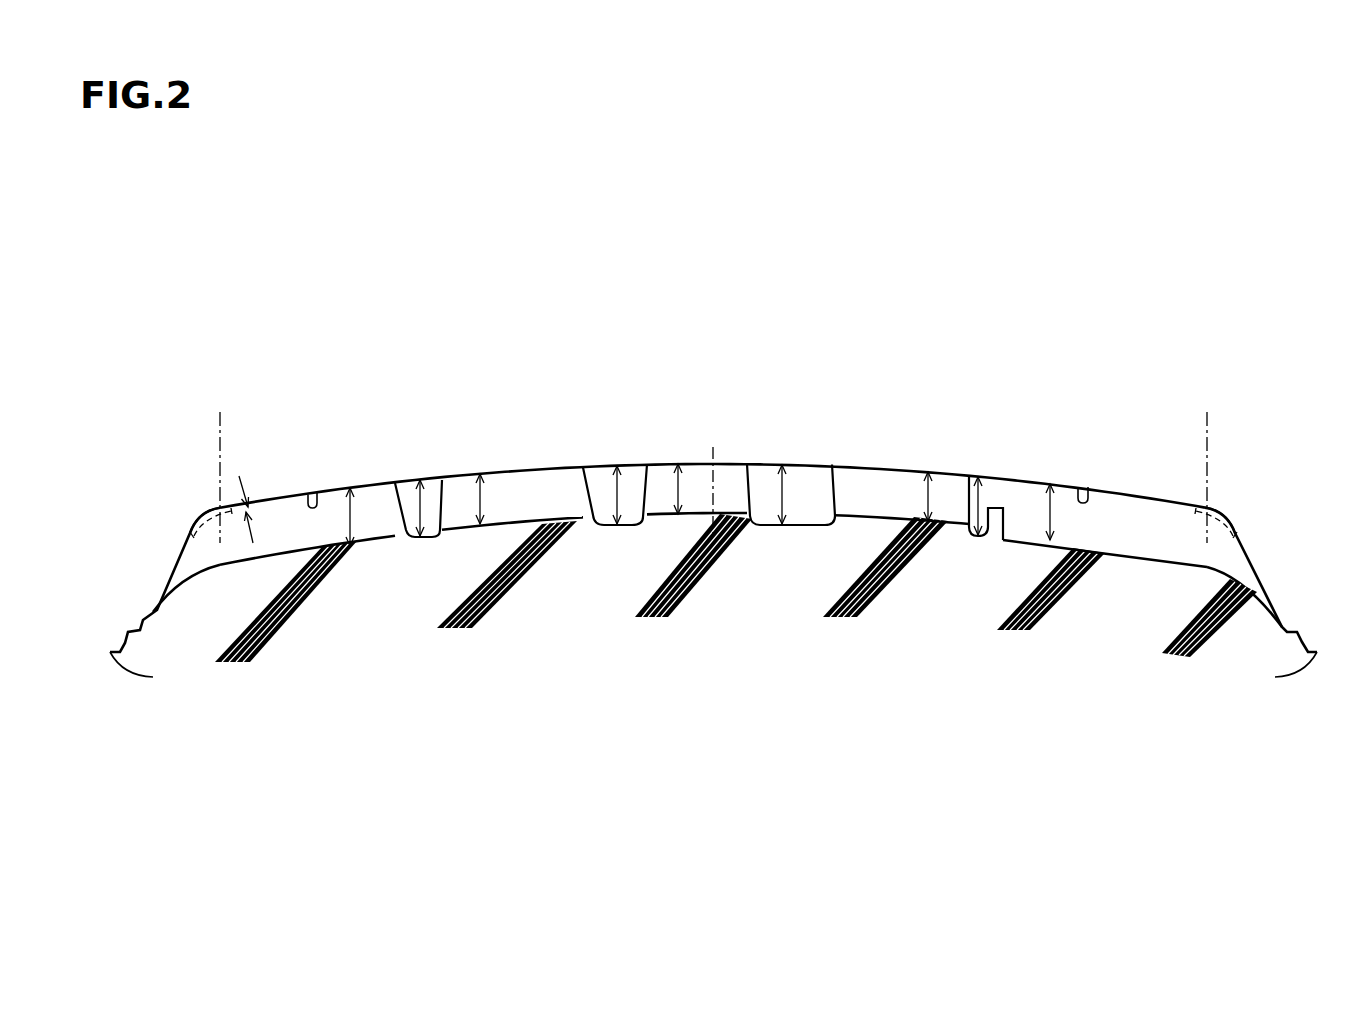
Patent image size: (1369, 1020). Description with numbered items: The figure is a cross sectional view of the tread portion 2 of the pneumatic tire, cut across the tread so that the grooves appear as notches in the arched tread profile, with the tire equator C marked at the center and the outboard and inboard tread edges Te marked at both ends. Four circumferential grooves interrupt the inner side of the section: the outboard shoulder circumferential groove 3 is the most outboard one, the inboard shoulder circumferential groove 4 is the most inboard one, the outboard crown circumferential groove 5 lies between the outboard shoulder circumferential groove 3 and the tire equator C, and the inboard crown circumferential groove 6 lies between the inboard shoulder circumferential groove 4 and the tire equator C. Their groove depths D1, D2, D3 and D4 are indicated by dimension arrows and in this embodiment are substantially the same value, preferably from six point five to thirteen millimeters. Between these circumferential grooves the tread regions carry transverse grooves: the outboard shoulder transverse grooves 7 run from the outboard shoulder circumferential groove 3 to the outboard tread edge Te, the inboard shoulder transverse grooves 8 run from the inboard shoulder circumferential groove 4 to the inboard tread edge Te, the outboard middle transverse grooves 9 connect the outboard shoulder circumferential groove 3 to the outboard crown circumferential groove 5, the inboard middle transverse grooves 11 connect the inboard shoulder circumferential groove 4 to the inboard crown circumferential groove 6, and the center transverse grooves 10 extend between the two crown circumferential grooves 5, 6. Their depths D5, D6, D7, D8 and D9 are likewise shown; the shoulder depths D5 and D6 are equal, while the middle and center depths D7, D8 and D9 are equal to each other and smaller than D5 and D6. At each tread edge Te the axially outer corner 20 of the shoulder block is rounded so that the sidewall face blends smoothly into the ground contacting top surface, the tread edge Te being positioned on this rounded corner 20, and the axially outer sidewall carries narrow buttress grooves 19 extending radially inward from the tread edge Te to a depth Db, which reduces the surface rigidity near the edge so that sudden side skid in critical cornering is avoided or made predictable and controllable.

The tread portion 2 is at (1040, 393).
The outboard shoulder circumferential groove 3 is at (973, 510).
The inboard shoulder circumferential groove 4 is at (433, 503).
The outboard crown circumferential groove 5 is at (813, 487).
The inboard crown circumferential groove 6 is at (606, 490).
The outboard shoulder transverse groove 7 is at (1103, 517).
The inboard shoulder transverse groove 8 is at (300, 517).
The outboard middle transverse groove 9 is at (887, 497).
The center transverse groove 10 is at (669, 497).
The inboard middle transverse groove 11 is at (527, 497).
The narrow buttress groove 19 is at (192, 530).
The rounded corner 20 is at (219, 507).
The tread edge Te is at (220, 448).
The tire equator C is at (712, 478).
The depth of the narrow buttress grooves Db is at (261, 509).
The groove depth of the outboard shoulder circumferential groove D1 is at (978, 507).
The groove depth of the inboard shoulder circumferential groove D2 is at (418, 510).
The groove depth of the outboard crown circumferential groove D3 is at (782, 495).
The groove depth of the inboard crown circumferential groove D4 is at (616, 495).
The groove depth of the outboard shoulder transverse grooves D5 is at (1051, 512).
The groove depth of the inboard shoulder transverse grooves D6 is at (350, 520).
The groove depth of the outboard middle transverse grooves D7 is at (929, 497).
The groove depth of the center transverse grooves D8 is at (677, 490).
The groove depth of the inboard middle transverse grooves D9 is at (479, 500).